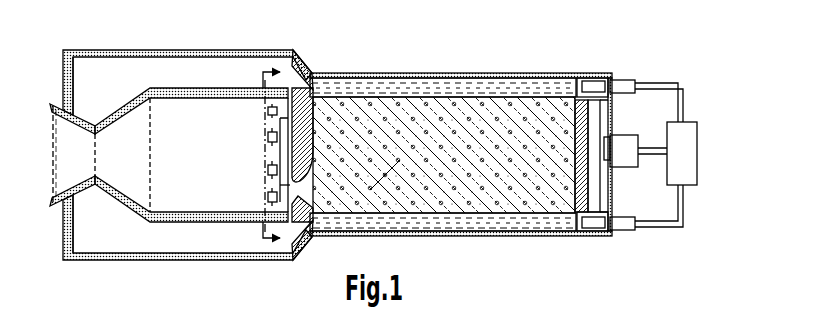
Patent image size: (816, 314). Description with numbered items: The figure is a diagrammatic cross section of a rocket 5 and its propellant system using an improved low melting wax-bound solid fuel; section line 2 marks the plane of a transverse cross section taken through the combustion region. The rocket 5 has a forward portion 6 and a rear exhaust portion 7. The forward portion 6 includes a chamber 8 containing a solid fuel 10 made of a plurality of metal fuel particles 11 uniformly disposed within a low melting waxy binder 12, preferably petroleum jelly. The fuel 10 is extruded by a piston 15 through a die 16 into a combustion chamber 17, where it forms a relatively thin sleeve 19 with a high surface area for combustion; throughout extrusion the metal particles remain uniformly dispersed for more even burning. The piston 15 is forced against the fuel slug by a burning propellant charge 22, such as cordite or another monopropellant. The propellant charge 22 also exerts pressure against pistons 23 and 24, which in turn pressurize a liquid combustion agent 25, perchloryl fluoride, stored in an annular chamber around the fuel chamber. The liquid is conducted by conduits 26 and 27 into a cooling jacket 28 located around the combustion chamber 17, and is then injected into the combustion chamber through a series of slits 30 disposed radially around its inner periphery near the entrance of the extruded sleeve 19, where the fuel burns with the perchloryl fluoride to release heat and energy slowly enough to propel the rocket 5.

The section line 2- 2 is at (263, 156).
The rocket 5 is at (387, 72).
The forward portion 6 is at (618, 81).
The rear exhaust portion 7 is at (58, 107).
The chamber 8 is at (500, 196).
The solid fuel 10 is at (455, 196).
The metal fuel particles 11 is at (425, 138).
The low melting waxy binder 12 is at (401, 180).
The piston 15 is at (586, 183).
The die 16 is at (305, 92).
The combustion chamber 17 is at (180, 121).
The sleeve 19 is at (278, 188).
The propellant charge 22 is at (628, 140).
The piston 23 is at (586, 80).
The piston 24 is at (592, 232).
The liquid combustion agent 25 is at (496, 80).
The conduit 26 is at (170, 50).
The conduit 27 is at (157, 262).
The cooling jacket 28 is at (172, 95).
The slits 30 is at (268, 115).